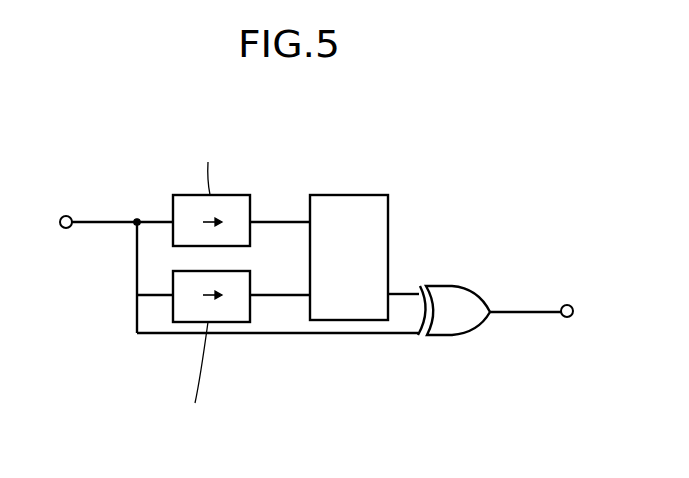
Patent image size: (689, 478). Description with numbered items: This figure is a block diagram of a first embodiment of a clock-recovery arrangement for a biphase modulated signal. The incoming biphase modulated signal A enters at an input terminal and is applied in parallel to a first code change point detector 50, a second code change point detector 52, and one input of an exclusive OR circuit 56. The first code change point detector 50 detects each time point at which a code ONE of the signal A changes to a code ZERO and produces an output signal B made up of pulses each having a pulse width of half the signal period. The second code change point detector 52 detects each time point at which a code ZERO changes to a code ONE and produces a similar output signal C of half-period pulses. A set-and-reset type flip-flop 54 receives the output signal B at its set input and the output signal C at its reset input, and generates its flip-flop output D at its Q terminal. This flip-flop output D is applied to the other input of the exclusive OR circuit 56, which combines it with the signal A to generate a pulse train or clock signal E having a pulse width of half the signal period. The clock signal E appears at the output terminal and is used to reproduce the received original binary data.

The first code change point detector 50 is at (175, 195).
The second code change point detector 52 is at (172, 323).
The set-and-reset type flip-flop 54 is at (365, 195).
The exclusive OR circuit 56 is at (456, 338).
The incoming biphase modulated signal A is at (83, 217).
The output signal of first detector B is at (282, 217).
The output signal of second detector C is at (285, 297).
The flip-flop output D is at (407, 293).
The clock signal E is at (535, 313).